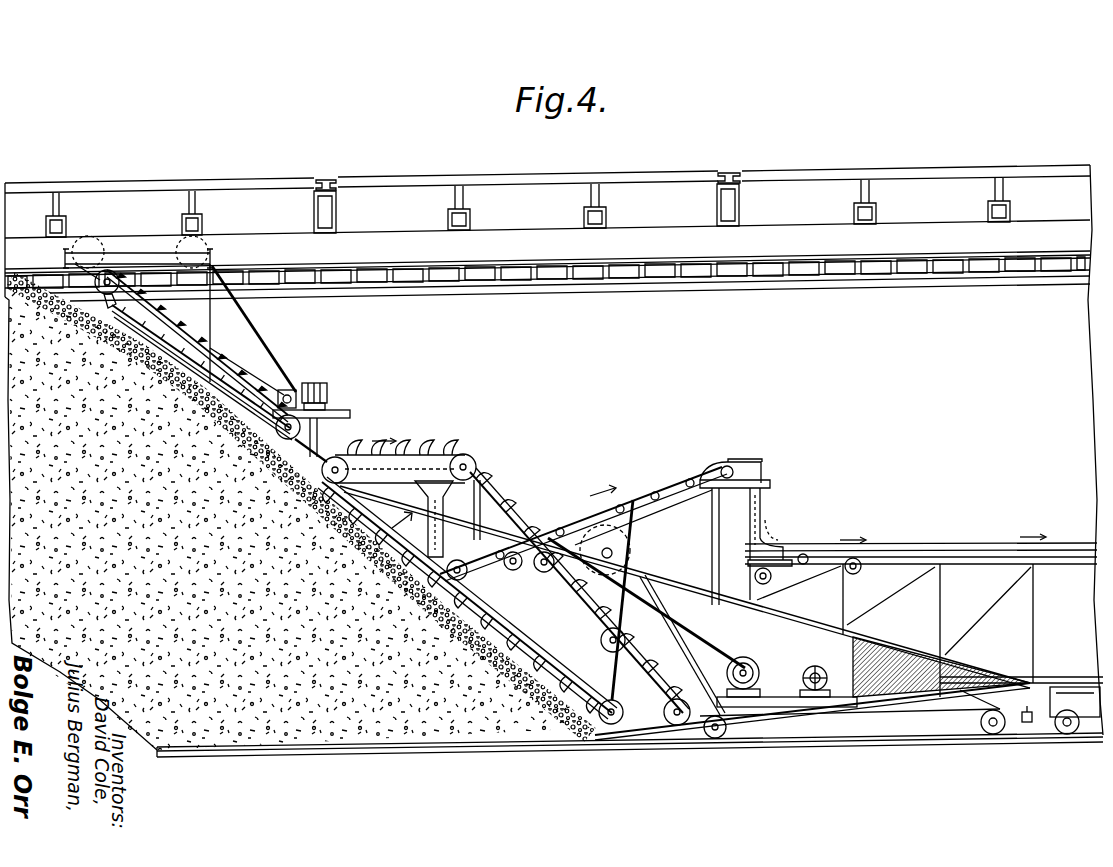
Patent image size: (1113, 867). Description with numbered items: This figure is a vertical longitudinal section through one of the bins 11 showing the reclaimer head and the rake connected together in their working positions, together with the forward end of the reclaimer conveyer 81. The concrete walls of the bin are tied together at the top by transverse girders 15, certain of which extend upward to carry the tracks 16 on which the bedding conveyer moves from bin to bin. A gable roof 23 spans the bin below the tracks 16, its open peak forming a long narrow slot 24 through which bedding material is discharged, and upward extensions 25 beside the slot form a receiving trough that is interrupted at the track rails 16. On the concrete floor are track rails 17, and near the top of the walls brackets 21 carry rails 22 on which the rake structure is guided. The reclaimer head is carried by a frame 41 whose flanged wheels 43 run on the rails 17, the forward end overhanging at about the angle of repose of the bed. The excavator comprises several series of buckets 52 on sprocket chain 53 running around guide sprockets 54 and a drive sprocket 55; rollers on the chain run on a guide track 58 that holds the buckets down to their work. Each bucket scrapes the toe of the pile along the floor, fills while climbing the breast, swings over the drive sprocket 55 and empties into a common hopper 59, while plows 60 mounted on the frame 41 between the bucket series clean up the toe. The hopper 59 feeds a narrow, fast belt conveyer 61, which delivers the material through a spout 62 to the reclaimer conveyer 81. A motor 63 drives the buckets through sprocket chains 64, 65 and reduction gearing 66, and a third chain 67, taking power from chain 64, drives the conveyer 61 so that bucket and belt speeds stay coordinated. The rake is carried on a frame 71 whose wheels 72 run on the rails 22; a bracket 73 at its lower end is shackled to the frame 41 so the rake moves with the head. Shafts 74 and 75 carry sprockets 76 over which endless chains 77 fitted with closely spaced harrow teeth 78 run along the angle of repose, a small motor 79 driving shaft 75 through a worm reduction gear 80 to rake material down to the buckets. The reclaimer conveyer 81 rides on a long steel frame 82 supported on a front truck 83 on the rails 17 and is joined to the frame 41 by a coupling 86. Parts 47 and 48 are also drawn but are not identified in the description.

The bin 11 is at (912, 417).
The transverse girders 15 is at (338, 218).
The tracks 16 is at (324, 179).
The track rails 17 is at (877, 740).
The brackets 21 is at (690, 277).
The rails 22 is at (272, 264).
The gable roof 23 is at (547, 213).
The slot 24 is at (518, 186).
The upward extensions 25 is at (458, 181).
The frame 41 is at (704, 585).
The flanged wheels 43 is at (988, 734).
The gusset plate 47 is at (885, 642).
The gear 48 is at (818, 672).
The buckets 52 is at (523, 649).
The sprocket chain 53 is at (565, 615).
The guide sprockets 54 is at (476, 470).
The drive sprocket 55 is at (355, 452).
The guide track 58 is at (490, 603).
The hopper 59 is at (466, 460).
The spreaders or plows 60 is at (633, 712).
The belt conveyer 61 is at (657, 493).
The spout 62 is at (764, 518).
The motor 63 is at (760, 672).
The sprocket chain 64 is at (711, 641).
The sprocket chain 65 is at (542, 512).
The reduction gearing 66 is at (405, 453).
The third sprocket chain 67 is at (668, 510).
The frame 71 is at (262, 372).
The wheels 72 is at (90, 240).
The bracket 73 is at (312, 442).
The shaft 74 is at (108, 280).
The shaft 75 is at (335, 409).
The sprockets 76 is at (170, 300).
The endless chains 77 is at (228, 360).
The harrow teeth 78 is at (246, 326).
The small motor 79 is at (322, 382).
The worm reduction gear 80 is at (291, 390).
The reclaimer conveyer 81 is at (905, 549).
The steel frame 82 is at (990, 600).
The front truck 83 is at (1075, 710).
The coupling 86 is at (1034, 724).